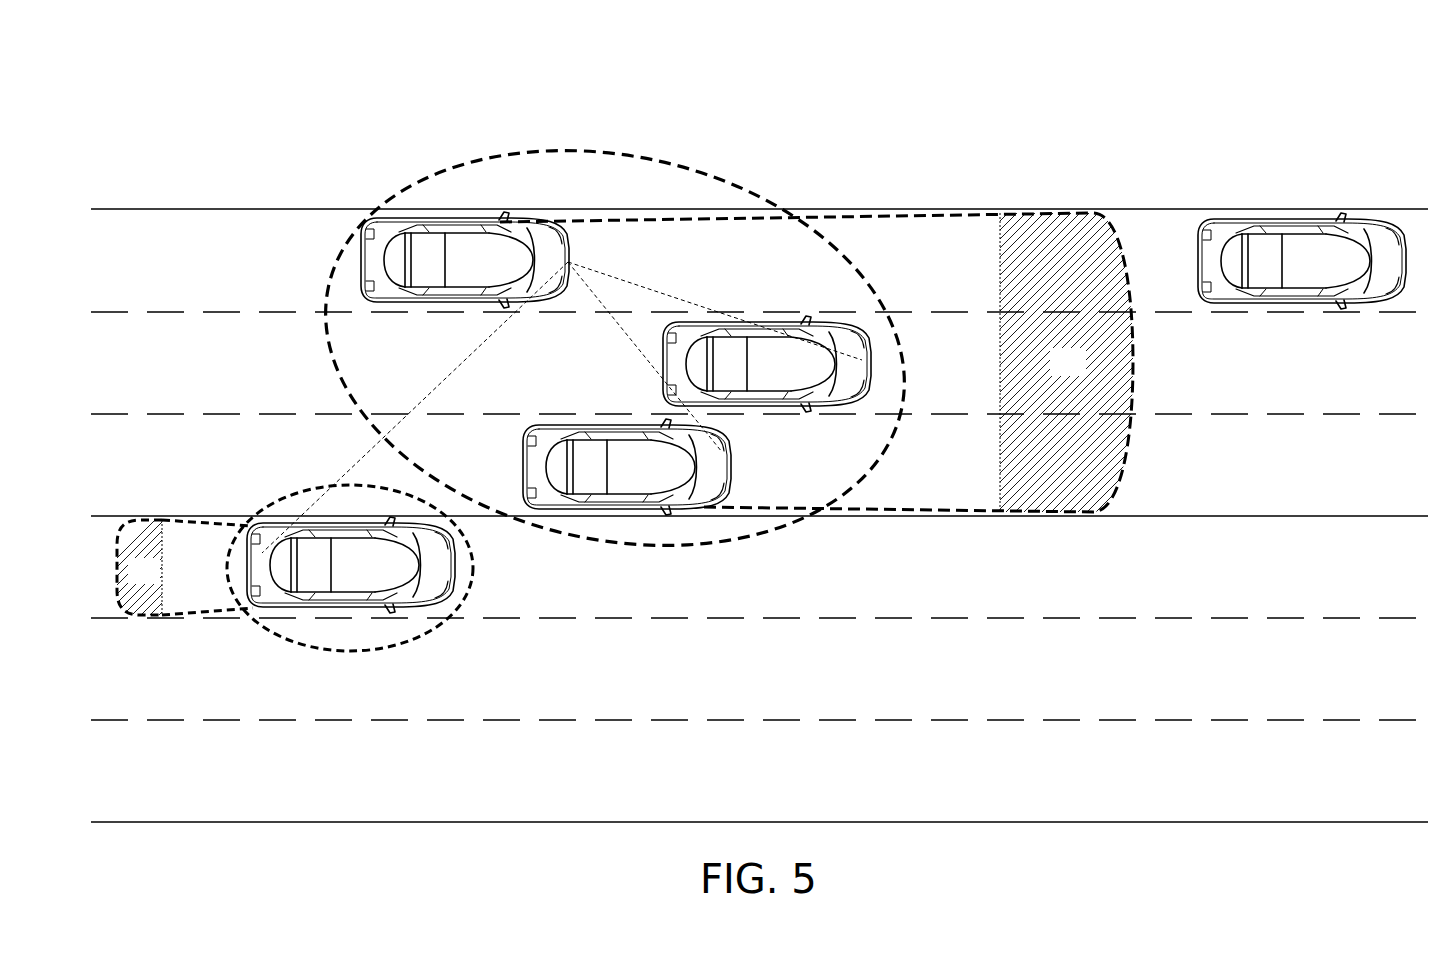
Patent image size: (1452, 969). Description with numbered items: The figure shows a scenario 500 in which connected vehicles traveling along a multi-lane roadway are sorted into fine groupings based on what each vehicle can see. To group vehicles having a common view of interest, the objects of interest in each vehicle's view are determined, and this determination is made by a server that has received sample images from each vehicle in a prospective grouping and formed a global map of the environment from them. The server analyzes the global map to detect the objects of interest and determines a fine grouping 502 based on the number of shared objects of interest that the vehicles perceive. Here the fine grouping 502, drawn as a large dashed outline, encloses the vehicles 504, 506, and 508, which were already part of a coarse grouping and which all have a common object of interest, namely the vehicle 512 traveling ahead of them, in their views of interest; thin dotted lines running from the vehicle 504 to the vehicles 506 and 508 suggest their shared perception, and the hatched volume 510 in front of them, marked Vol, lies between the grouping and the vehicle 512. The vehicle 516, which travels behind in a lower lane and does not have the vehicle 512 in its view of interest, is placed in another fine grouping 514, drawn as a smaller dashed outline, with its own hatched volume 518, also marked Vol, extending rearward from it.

The scenario 500 is at (260, 140).
The fine grouping 502 is at (723, 171).
The vehicle 504 is at (527, 218).
The vehicle 506 is at (523, 463).
The vehicle 508 is at (808, 322).
The free space volume ahead 510 is at (1060, 226).
The vehicle 512 is at (1198, 262).
The fine grouping 514 is at (352, 653).
The vehicle 516 is at (455, 567).
The free space volume of second vehicle 518 is at (142, 530).